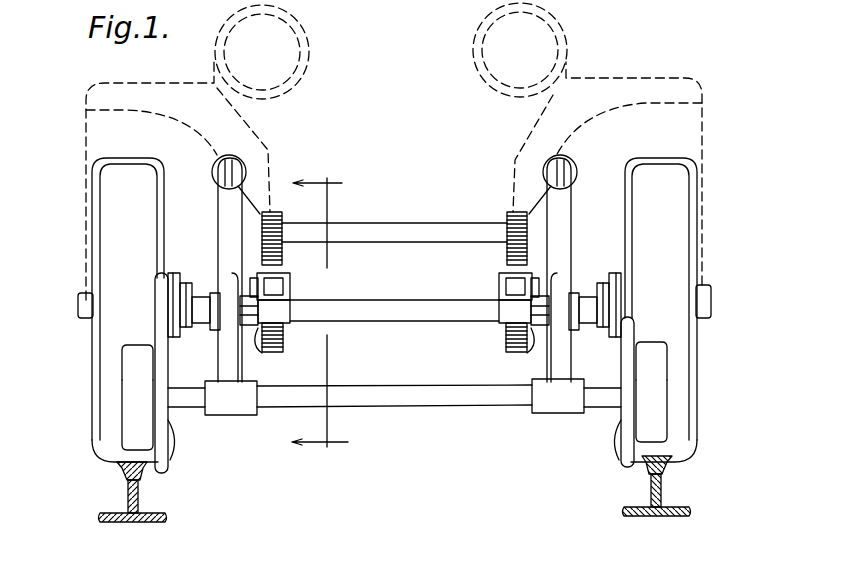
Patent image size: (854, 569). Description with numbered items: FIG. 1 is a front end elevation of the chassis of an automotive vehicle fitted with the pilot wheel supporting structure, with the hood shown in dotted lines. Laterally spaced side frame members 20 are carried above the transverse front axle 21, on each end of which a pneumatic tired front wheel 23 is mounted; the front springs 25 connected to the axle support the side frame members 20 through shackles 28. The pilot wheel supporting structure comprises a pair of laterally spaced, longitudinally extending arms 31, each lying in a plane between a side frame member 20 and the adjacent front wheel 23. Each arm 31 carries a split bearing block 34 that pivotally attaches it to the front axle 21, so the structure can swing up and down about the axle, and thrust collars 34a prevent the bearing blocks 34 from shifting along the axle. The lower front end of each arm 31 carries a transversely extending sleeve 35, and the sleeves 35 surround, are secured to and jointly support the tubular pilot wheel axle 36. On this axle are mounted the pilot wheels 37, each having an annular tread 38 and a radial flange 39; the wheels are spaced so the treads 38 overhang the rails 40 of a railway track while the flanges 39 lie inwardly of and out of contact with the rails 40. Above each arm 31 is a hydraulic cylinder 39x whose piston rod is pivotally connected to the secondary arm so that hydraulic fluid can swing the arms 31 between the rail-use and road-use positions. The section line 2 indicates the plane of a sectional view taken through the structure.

The section line 2- 2 is at (320, 316).
The side frame members 20 is at (266, 214).
The front axle 21 is at (390, 312).
The front pneumatic tired wheels 23 is at (106, 247).
The front springs 25 is at (284, 340).
The shackles 28 is at (292, 290).
The arms 31 is at (213, 348).
The bearing block 34 is at (214, 292).
The thrust collars 34a is at (394, 352).
The sleeve 35 is at (222, 414).
The pilot wheel axle 36 is at (381, 395).
The pilot wheels 37 is at (128, 373).
The annular tread 38 is at (127, 400).
The radial flange 39 is at (158, 423).
The cylinder 39x is at (212, 178).
The rails 40 is at (128, 492).